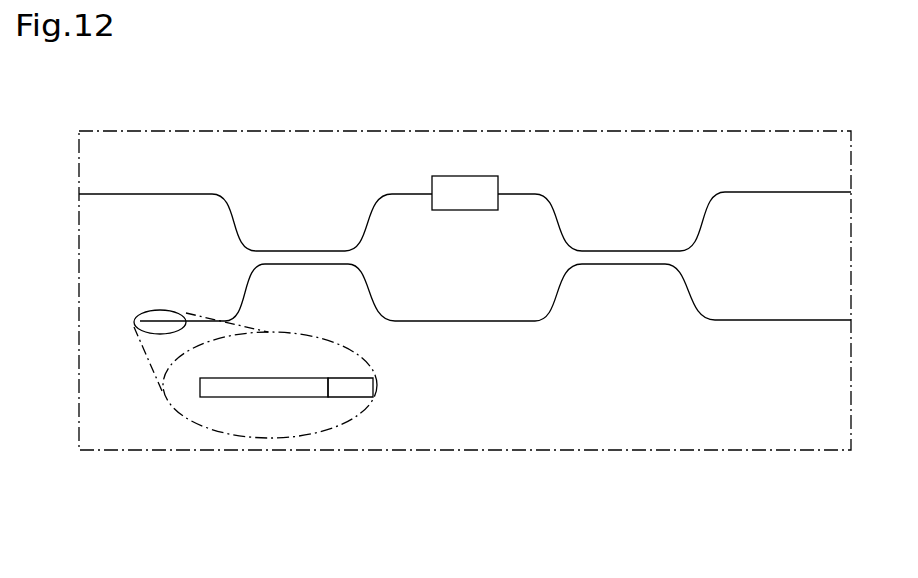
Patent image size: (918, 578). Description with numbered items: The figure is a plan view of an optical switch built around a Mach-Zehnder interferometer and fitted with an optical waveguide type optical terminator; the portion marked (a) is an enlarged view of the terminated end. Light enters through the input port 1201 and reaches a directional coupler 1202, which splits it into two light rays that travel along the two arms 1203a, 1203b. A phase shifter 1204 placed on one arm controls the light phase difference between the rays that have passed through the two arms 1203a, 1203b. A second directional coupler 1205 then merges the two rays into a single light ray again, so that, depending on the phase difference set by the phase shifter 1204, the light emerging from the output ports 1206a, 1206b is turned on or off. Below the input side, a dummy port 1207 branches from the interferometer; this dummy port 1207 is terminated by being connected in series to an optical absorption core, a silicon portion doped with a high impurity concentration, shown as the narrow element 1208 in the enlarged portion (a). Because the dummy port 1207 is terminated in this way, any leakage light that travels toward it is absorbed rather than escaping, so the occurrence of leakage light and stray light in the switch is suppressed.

The input port 1201 is at (147, 194).
The directional coupler 1202 is at (304, 251).
The arm 1203a is at (411, 194).
The arm 1203b is at (436, 321).
The phase shifter 1204 is at (498, 188).
The directional coupler 1205 is at (621, 251).
The output port 1206a is at (787, 192).
The output port 1206b is at (791, 320).
The dummy port 1207 is at (199, 320).
The narrow waveguide portion 1208 is at (163, 322).